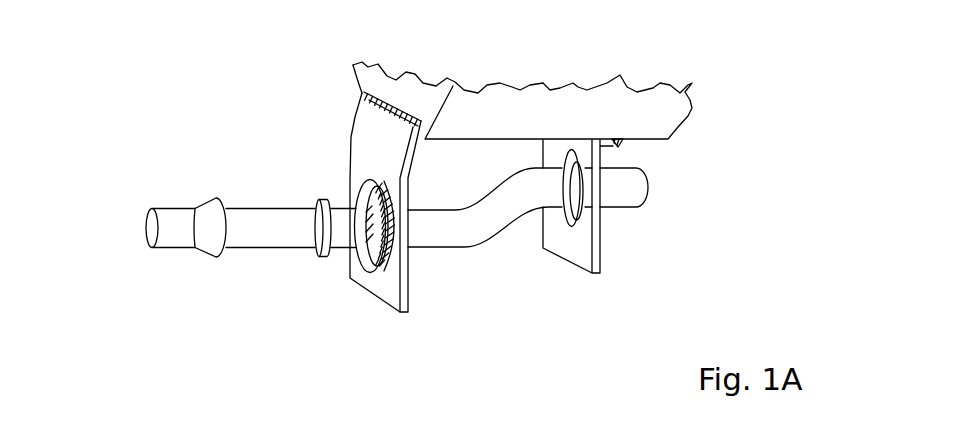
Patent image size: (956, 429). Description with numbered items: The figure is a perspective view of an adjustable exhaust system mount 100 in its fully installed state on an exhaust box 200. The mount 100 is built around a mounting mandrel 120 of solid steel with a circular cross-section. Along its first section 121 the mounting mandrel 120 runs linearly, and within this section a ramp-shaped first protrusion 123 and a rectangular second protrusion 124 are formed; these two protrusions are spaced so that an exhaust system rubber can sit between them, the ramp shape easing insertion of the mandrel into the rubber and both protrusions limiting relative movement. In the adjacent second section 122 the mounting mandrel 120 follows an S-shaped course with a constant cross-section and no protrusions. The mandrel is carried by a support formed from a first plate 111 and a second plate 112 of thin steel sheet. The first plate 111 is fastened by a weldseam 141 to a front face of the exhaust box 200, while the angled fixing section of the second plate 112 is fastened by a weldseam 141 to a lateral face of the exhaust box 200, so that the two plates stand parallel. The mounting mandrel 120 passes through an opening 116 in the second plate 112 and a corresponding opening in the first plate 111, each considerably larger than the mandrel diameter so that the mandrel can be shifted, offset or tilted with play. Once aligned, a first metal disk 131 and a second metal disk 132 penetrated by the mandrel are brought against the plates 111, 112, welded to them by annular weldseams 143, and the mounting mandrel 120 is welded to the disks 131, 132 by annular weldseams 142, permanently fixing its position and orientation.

The mount 100 is at (136, 114).
The exhaust box 200 is at (570, 121).
The first plate 111 is at (397, 311).
The second plate 112 is at (597, 274).
The opening 116 is at (545, 162).
The mounting mandrel 120 is at (180, 208).
The first section 121 is at (337, 322).
The second section 122 is at (648, 350).
The first protrusion 123 is at (215, 257).
The second protrusion 124 is at (324, 261).
The first metal disk 131 is at (362, 191).
The second metal disk 132 is at (558, 219).
The weldseam 141 is at (364, 93).
The annular weldseam 142 is at (360, 268).
The annular weldseam 143 is at (394, 182).